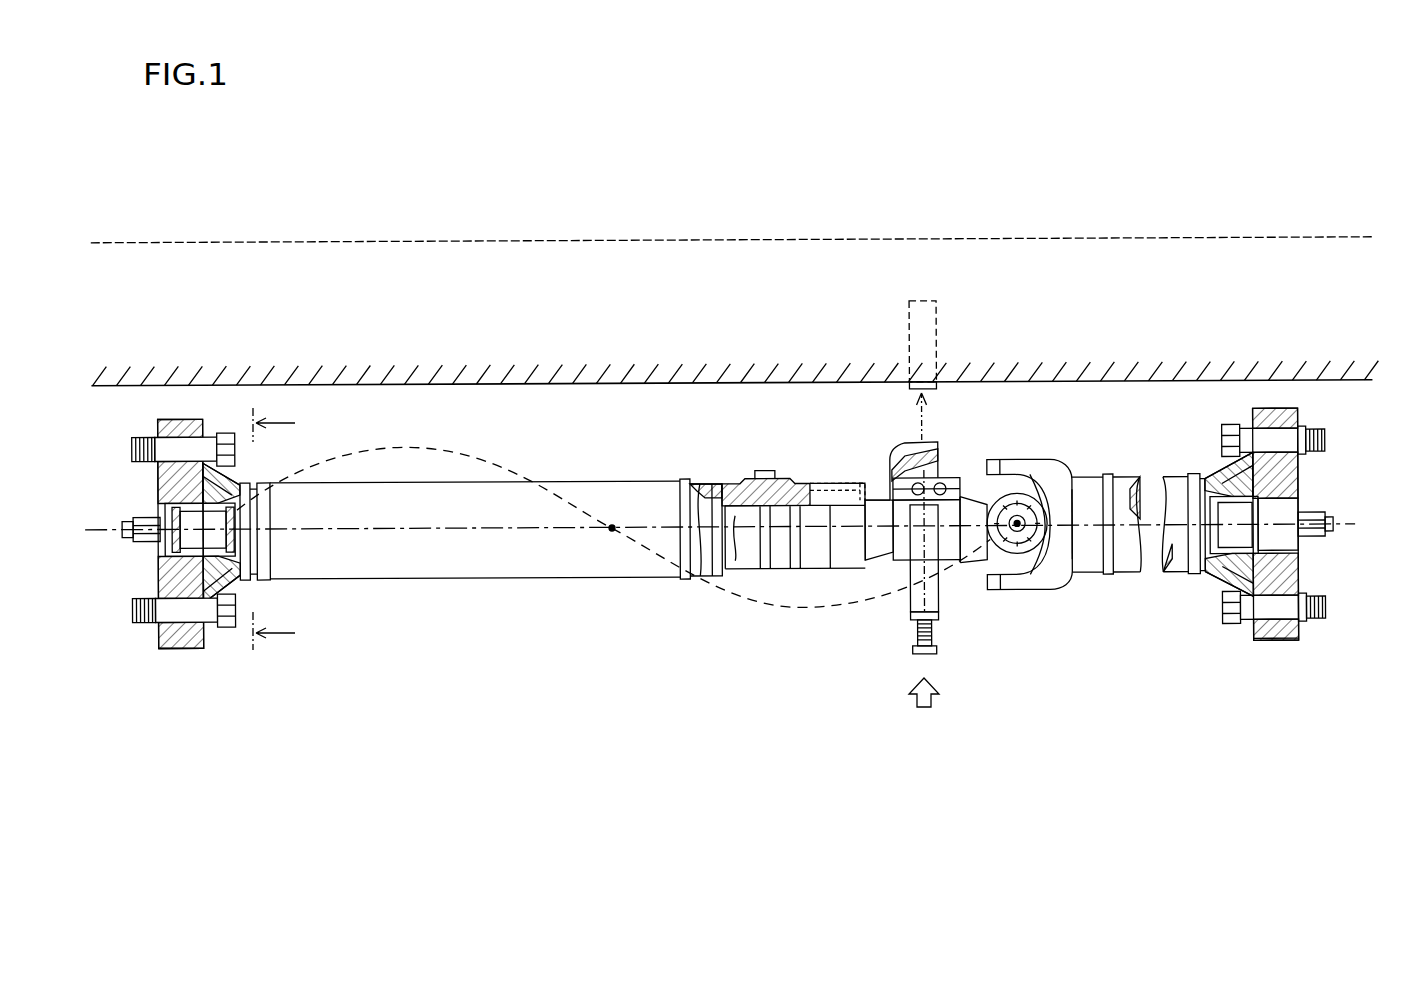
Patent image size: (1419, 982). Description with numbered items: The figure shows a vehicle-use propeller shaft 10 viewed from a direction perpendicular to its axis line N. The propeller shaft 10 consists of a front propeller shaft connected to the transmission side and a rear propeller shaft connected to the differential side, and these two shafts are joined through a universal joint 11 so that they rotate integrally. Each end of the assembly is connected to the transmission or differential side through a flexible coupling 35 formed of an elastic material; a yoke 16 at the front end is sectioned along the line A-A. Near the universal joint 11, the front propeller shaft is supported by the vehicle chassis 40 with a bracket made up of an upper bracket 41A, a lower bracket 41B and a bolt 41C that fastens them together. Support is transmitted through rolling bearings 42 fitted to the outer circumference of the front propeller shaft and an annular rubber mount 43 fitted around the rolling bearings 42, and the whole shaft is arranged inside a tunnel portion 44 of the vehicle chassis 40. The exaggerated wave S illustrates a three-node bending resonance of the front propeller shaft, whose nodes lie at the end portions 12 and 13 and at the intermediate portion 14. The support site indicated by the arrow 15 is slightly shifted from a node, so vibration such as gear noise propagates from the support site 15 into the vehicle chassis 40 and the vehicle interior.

The vehicle-use propeller shaft 10 is at (483, 589).
The universal joint 11 is at (1029, 452).
The end portion 12 is at (203, 530).
The end portion 13 is at (1017, 523).
The intermediate portion 14 is at (612, 531).
The support site 15 is at (924, 713).
The yoke 16 is at (218, 638).
The flexible coupling 35 is at (178, 650).
The vehicle chassis 40 is at (745, 384).
The upper bracket 41A is at (910, 333).
The lower bracket 41B is at (940, 598).
The bolt 41C is at (904, 659).
The rolling bearings 42 is at (937, 478).
The annular rubber mount 43 is at (900, 460).
The tunnel portion 44 is at (1214, 238).
The wave S is at (518, 444).
The axis line N is at (1361, 513).
The line A- A is at (288, 528).